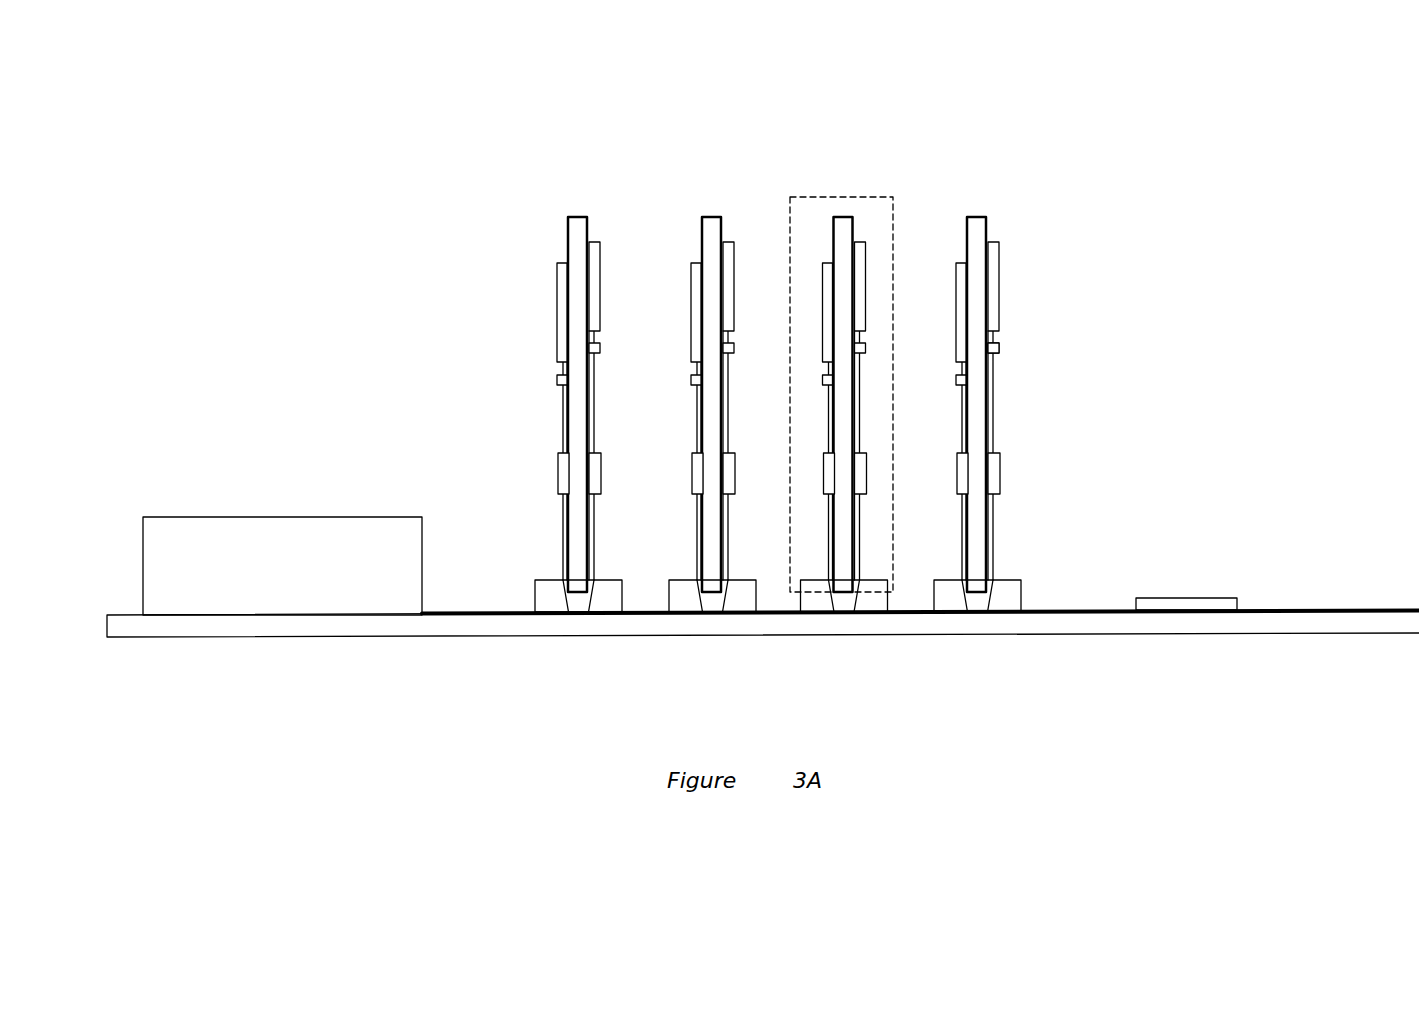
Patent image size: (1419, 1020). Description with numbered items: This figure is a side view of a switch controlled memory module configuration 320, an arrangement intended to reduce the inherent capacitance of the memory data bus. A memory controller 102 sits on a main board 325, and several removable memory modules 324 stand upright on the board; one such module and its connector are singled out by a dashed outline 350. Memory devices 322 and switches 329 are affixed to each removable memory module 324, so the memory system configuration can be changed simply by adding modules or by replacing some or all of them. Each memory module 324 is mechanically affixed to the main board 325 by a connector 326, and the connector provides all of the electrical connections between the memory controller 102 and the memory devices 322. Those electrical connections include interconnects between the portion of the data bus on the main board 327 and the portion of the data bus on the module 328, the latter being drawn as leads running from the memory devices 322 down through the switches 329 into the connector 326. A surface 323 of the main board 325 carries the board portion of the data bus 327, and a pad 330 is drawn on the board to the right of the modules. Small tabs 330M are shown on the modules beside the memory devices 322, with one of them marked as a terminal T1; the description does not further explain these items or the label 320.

The probe card assembly 320 is at (1330, 102).
The probe module (dashed outline) 350 is at (825, 197).
The memory module 324 is at (578, 217).
The memory device 322 is at (557, 315).
The mounting tab 330M is at (557, 381).
The terminal T1 is at (999, 352).
The switch 329 is at (558, 485).
The portion of the data bus on the module 328 is at (563, 530).
The connector 326 is at (535, 580).
The portion of the data bus on the main board 327 is at (453, 616).
The substrate surface 323 is at (913, 612).
The main board 325 is at (1311, 610).
The contact pad 330 is at (1205, 598).
The memory controller 102 is at (325, 517).